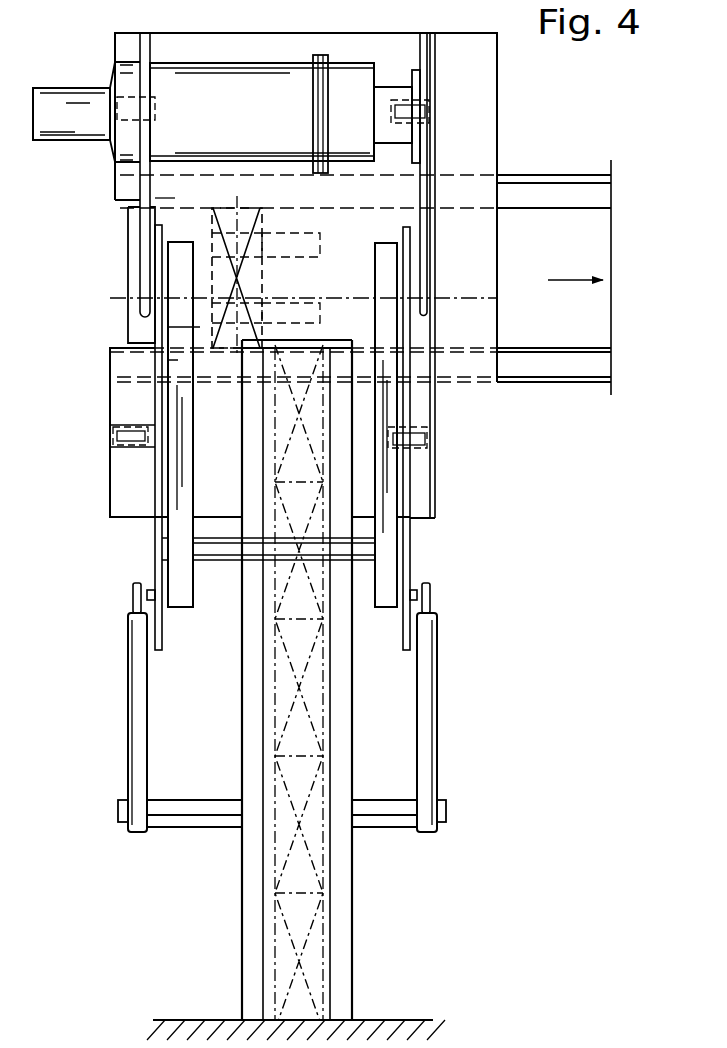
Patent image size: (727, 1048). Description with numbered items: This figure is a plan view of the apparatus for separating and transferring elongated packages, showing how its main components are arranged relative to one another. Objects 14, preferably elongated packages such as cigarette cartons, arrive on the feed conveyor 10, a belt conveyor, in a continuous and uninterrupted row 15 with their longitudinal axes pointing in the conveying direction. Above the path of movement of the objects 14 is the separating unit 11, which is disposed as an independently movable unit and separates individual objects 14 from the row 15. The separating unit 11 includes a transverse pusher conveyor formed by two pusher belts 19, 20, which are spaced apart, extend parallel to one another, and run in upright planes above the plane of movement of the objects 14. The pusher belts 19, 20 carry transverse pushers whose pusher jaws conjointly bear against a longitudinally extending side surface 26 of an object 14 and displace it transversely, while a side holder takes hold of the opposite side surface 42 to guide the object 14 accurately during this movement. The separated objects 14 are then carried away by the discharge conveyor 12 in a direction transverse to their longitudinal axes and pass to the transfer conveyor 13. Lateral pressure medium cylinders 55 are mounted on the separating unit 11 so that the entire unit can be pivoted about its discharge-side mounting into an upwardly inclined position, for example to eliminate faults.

The feed conveyor 10 is at (373, 898).
The separating unit 11 is at (428, 535).
The discharge conveyor 12 is at (342, 242).
The transfer conveyor 13 is at (563, 387).
The objects 14 is at (213, 337).
The row 15 is at (323, 942).
The pusher belt 19 is at (180, 458).
The pusher belt 20 is at (383, 473).
The side surface 26 is at (280, 518).
The side surface 42 is at (333, 420).
The pressure medium cylinders 55 is at (137, 692).